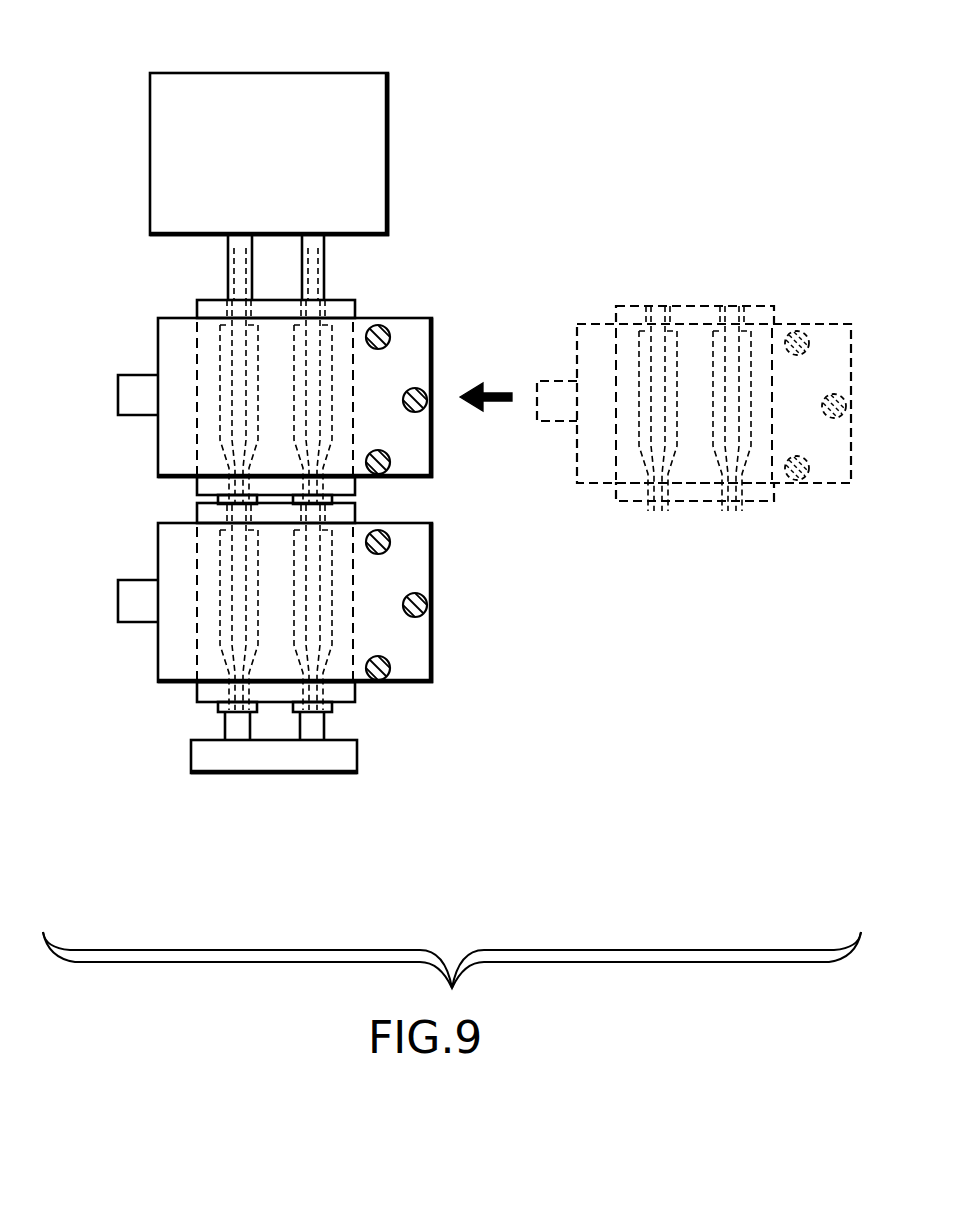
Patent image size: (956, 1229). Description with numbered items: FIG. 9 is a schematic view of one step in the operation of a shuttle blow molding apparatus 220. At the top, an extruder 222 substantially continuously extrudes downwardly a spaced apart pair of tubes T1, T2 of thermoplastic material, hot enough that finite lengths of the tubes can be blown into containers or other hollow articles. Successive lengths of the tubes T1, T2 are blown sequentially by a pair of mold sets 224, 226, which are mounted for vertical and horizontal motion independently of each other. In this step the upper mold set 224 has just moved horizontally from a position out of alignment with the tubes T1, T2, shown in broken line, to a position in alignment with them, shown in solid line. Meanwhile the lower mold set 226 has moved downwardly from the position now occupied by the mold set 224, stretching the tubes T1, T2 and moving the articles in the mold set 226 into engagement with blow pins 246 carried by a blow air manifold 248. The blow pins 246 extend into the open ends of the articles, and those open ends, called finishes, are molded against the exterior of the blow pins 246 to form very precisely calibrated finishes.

The shuttle blow molding apparatus 220 is at (405, 64).
The extruder 222 is at (388, 158).
The mold set 224 is at (410, 340).
The mold set 226 is at (432, 590).
The blow pins 246 is at (225, 724).
The blow air manifold 248 is at (357, 762).
The tube T1 is at (228, 260).
The tube T2 is at (324, 265).